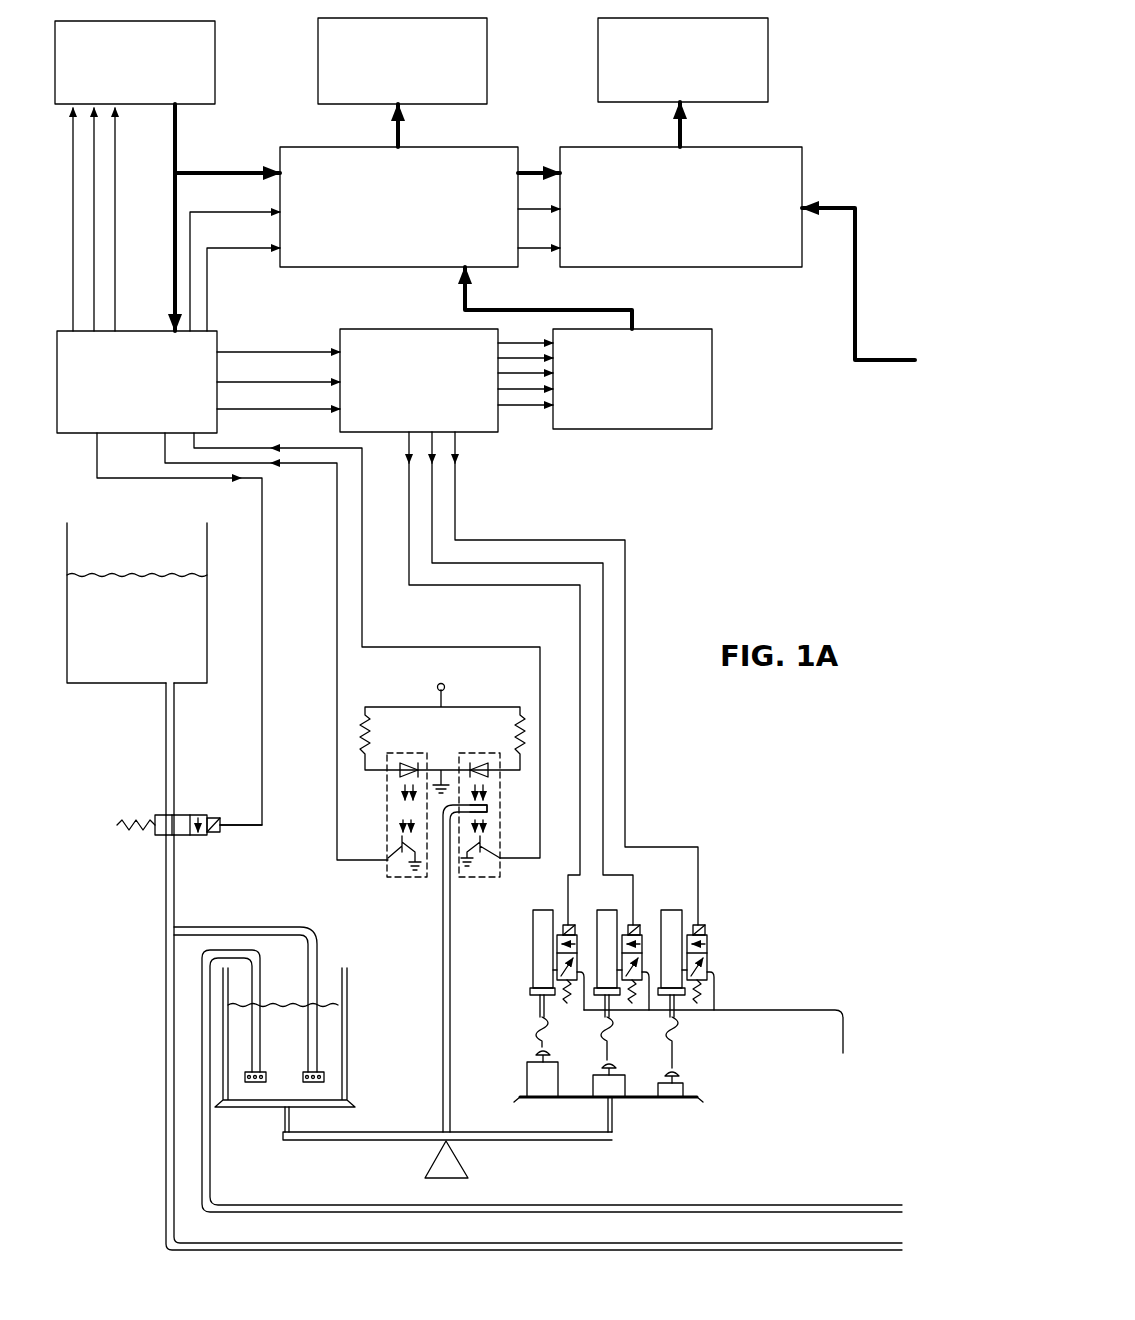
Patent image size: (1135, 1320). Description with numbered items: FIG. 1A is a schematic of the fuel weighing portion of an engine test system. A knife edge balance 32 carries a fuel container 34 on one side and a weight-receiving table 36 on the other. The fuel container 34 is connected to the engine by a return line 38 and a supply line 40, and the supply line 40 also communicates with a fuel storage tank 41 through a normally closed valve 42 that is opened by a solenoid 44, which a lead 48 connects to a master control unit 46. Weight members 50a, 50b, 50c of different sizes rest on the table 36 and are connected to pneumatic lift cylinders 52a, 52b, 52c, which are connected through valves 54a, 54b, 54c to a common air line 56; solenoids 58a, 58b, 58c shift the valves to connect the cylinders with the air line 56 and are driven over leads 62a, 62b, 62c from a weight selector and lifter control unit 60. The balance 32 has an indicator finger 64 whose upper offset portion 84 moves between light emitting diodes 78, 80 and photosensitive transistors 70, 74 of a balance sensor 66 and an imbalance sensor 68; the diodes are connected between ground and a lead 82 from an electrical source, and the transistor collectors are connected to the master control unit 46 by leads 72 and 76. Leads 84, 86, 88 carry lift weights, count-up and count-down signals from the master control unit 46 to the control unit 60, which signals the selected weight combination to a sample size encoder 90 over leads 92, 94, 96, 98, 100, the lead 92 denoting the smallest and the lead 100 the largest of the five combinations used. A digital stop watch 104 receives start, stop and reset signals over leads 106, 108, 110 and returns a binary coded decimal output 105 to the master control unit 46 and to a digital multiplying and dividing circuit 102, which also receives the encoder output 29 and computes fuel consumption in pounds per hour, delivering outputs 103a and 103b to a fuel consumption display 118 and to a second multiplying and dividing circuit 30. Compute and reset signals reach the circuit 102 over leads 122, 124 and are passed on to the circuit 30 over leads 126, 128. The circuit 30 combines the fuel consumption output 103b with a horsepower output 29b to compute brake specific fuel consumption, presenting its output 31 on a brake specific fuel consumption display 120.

The digital stop watch 104 is at (211, 77).
The fuel consumption display unit 118 is at (487, 77).
The brake specific fuel consumption display 120 is at (768, 77).
The digital multiplying and dividing circuit 102 is at (398, 268).
The digital multiplying and dividing circuit 30 is at (803, 176).
The master control unit 46 is at (78, 433).
The weight selector and lifter control unit 60 is at (390, 432).
The sample size encoder 90 is at (668, 429).
The lead 106 is at (72, 140).
The lead 108 is at (94, 172).
The lead 110 is at (115, 185).
The binary coded decimal output 105 is at (176, 152).
The lead 122 is at (222, 212).
The lead 124 is at (228, 248).
The binary coded decimal output 103a is at (403, 142).
The binary coded decimal output 103b is at (528, 168).
The lead 126 is at (532, 209).
The lead 128 is at (532, 248).
The binary coded decimal output 31 is at (684, 142).
The binary coded decimal output 29 is at (572, 310).
The horsepower binary coded decimal output 29b is at (880, 360).
The lead / upper offset portion of indicator finger 84 is at (263, 346).
The lead 86 is at (263, 375).
The lead 88 is at (263, 402).
The lead 92 is at (510, 343).
The lead 94 is at (523, 358).
The lead 96 is at (508, 375).
The lead 98 is at (533, 406).
The lead 100 is at (527, 395).
The lead 62a is at (625, 598).
The lead 62b is at (603, 634).
The lead 62c is at (579, 619).
The lead 72 is at (452, 647).
The lead 76 is at (337, 695).
The lead 48 is at (262, 650).
The fuel reservoir or storage tank 41 is at (207, 663).
The normally closed valve 42 is at (192, 813).
The solenoid 44 is at (213, 817).
The fuel line (supply line) 40 is at (658, 1243).
The fuel line (return line) 38 is at (649, 1205).
The fuel container 34 is at (347, 1062).
The knife edge balance 32 is at (502, 1142).
The indicator finger 64 is at (443, 951).
The weight-receiving table 36 is at (640, 1099).
The weight member 50a is at (683, 1090).
The weight member 50b is at (603, 1098).
The weight member 50c is at (527, 1078).
The pneumatic lift cylinder 52a is at (683, 912).
The pneumatic lift cylinder 52b is at (599, 910).
The pneumatic lift cylinder 52c is at (535, 931).
The valve 54a is at (707, 950).
The valve 54b is at (627, 985).
The valve 54c is at (562, 985).
The solenoid 58a is at (705, 930).
The solenoid 58b is at (634, 924).
The solenoid 58c is at (564, 924).
The common air line 56 is at (764, 1012).
The lead 82 is at (445, 707).
The light emitting diode 80 is at (410, 762).
The light emitting diode 78 is at (478, 762).
The imbalance sensor 68 is at (387, 811).
The balance sensor 66 is at (500, 803).
The photosensitive transistor 74 is at (397, 842).
The photosensitive transistor 70 is at (488, 841).